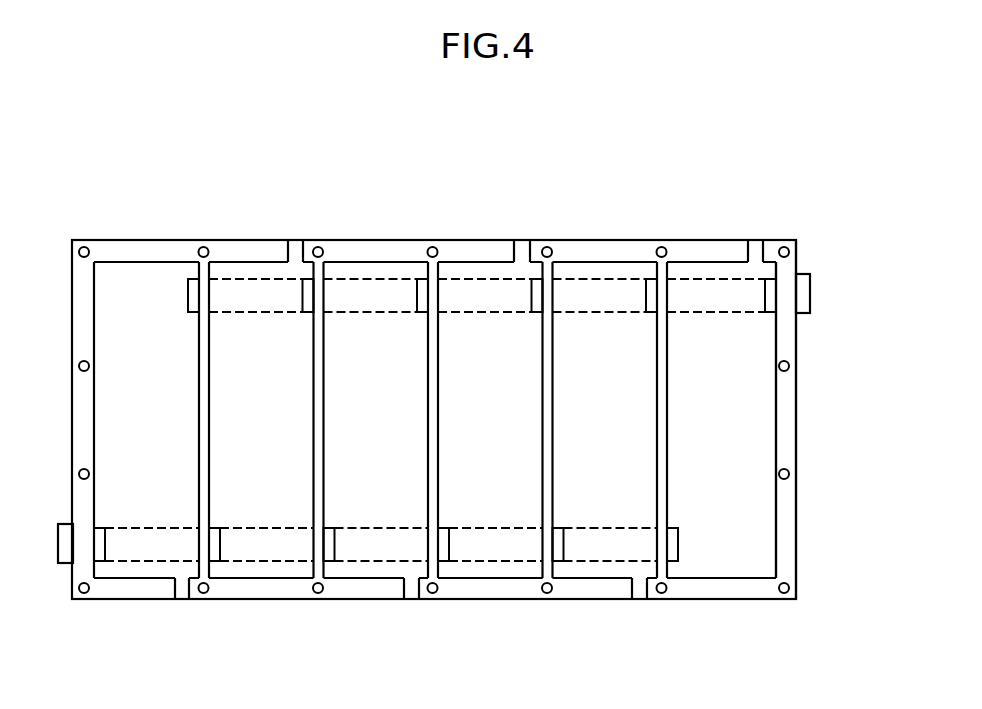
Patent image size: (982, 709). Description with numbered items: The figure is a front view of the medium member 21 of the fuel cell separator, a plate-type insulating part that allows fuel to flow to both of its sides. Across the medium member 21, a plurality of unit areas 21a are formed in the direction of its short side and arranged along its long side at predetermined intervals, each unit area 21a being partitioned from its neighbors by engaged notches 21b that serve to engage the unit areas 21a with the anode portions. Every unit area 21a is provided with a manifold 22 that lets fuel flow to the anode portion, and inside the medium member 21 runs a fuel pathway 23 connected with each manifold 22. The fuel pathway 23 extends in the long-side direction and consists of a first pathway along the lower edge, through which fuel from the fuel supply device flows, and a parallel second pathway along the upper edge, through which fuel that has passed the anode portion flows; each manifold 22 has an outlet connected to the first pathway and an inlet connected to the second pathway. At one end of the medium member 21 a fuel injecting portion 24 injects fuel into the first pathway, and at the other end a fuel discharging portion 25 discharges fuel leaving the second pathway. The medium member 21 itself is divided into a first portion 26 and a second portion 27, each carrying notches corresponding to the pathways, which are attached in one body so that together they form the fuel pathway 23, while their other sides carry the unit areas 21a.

The medium member 21 is at (796, 445).
The unit area 21a is at (482, 458).
The engaged notch 21b is at (542, 452).
The manifold 22 is at (531, 292).
The fuel pathway 23 is at (716, 278).
The fuel injecting portion 24 is at (58, 548).
The fuel discharging portion 25 is at (810, 293).
The first portion 26 is at (828, 419).
The second portion 27 is at (796, 543).